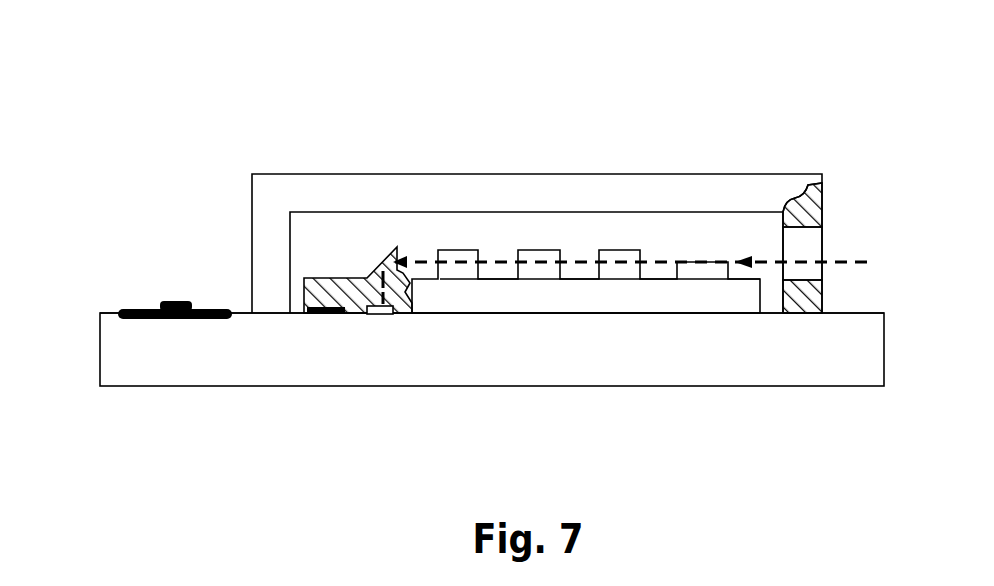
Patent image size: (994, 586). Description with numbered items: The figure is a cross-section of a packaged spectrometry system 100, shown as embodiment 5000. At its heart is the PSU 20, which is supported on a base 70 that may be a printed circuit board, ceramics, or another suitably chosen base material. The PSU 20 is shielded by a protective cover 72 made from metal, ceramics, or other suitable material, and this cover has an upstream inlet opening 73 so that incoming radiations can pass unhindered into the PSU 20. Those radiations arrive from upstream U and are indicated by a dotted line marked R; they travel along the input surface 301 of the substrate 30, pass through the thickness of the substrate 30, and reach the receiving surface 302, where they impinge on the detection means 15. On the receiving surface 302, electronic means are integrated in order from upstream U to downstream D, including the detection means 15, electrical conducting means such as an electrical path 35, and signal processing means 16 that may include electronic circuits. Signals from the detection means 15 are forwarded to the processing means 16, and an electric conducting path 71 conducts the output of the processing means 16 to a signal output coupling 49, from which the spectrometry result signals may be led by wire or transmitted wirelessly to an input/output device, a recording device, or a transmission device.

The embodiment 5000 is at (738, 109).
The packaged spectrometry system 100 is at (621, 168).
The protective cover 72 is at (792, 173).
The upstream inlet opening 73 is at (818, 236).
The PSU 20 is at (682, 246).
The substrate 30 is at (732, 297).
The input surface 301 is at (577, 283).
The receiving surface 302 is at (623, 317).
The electrical path 35 is at (355, 316).
The signal processing means 16 is at (322, 316).
The detection means 15 is at (382, 316).
The base 70 is at (483, 377).
The electric conducting path 71 is at (273, 316).
The signal output coupling 49 is at (130, 307).
The downstream D is at (235, 148).
The upstream U is at (832, 149).
The radiations R is at (872, 262).